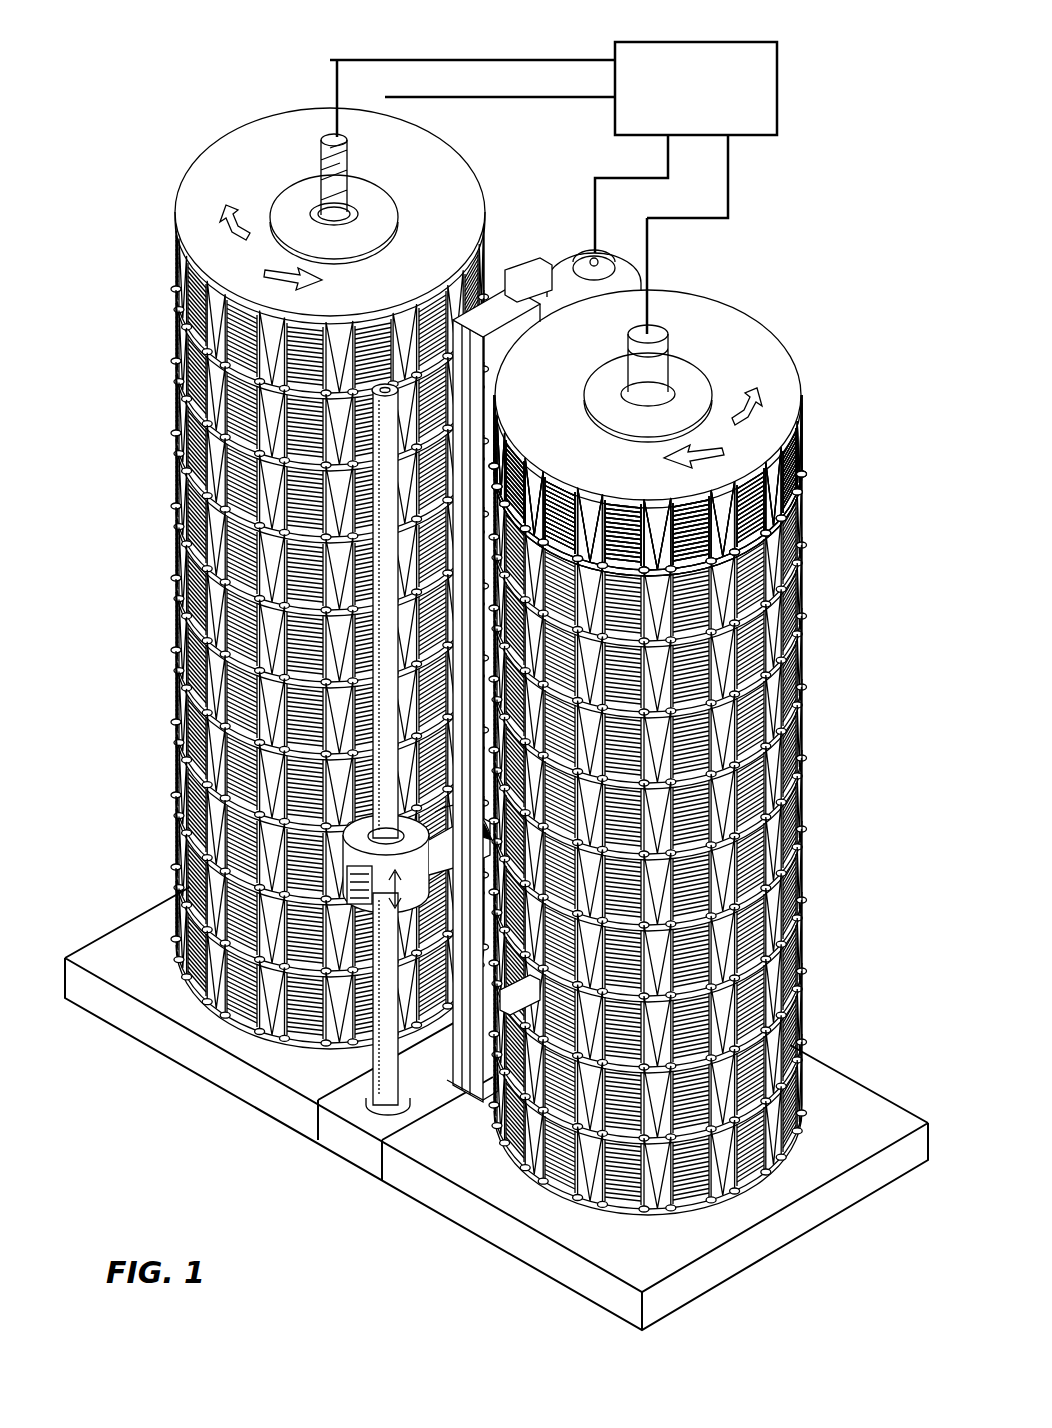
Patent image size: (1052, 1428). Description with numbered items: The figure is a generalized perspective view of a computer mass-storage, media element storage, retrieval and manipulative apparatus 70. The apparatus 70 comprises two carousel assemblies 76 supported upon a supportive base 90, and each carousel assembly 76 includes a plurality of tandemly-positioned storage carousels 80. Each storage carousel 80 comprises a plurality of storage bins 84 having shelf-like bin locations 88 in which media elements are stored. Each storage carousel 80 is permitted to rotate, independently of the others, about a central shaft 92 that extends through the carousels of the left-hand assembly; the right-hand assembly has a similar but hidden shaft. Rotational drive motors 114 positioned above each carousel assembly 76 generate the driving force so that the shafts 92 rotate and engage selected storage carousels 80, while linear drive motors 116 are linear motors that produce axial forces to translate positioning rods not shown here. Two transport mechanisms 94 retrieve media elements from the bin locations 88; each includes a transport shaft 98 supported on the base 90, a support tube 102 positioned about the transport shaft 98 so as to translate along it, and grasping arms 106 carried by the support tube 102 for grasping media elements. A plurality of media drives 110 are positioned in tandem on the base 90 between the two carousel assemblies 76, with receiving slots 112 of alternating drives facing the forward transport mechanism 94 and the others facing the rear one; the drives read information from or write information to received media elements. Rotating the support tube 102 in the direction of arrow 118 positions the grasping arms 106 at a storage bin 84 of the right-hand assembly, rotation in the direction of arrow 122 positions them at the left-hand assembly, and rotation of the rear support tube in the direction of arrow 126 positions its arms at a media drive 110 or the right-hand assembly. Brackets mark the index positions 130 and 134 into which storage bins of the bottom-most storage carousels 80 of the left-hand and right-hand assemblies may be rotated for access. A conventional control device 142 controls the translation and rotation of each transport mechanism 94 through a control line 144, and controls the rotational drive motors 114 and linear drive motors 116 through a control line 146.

The media element storage, retrieval and manipulative apparatus 70 is at (342, 1292).
The carousel assembly 76 is at (502, 661).
The storage carousel 80 is at (178, 286).
The storage bin 84 is at (360, 328).
The bin location 88 is at (634, 524).
The supportive base 90 is at (148, 990).
The shaft 92 is at (305, 195).
The transport mechanism 94 is at (640, 292).
The transport shaft 98 is at (597, 262).
The support tube 102 is at (655, 268).
The grasping arms 106 is at (512, 268).
The media drive 110 is at (455, 695).
The receiving slot 112 is at (468, 470).
The rotational drive motor 114 is at (325, 190).
The linear drive motor 116 is at (348, 140).
The arrow 118 is at (485, 849).
The arrow 122 is at (548, 800).
The arrow 126 is at (580, 166).
The index position 130 is at (407, 1082).
The index position 134 is at (480, 1072).
The control device 142 is at (650, 42).
The control line 144 is at (480, 100).
The control line 146 is at (330, 60).